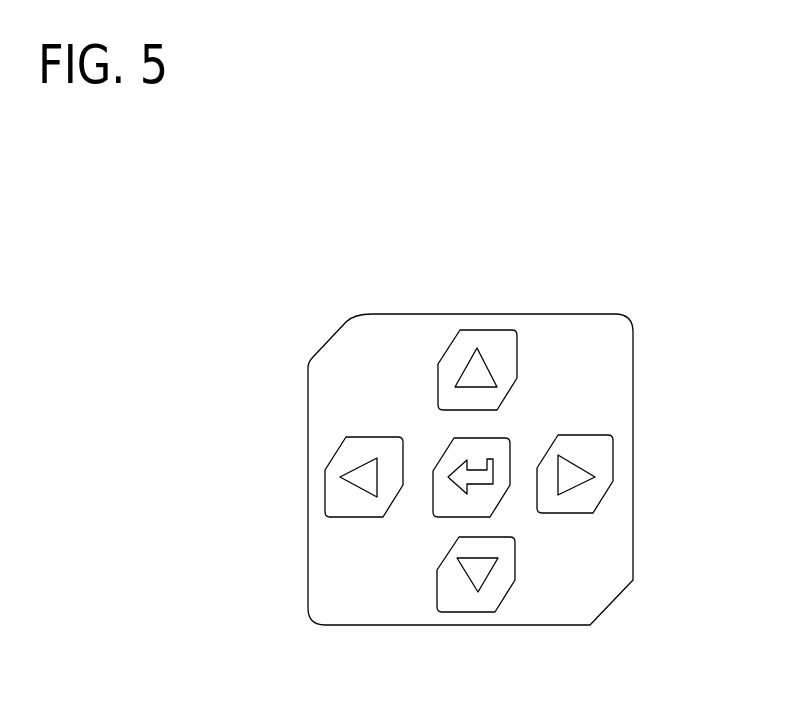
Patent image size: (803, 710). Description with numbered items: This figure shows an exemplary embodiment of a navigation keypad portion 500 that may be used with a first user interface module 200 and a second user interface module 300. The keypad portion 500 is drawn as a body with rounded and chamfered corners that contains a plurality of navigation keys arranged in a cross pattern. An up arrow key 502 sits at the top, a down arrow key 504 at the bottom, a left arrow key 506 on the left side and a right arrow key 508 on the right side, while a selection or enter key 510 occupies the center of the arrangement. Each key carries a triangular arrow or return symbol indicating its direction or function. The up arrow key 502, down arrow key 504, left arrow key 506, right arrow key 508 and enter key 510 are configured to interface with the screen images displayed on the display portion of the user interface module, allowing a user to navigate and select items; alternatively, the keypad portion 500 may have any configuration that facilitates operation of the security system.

The first user interface module 200 is at (262, 212).
The second user interface module 300 is at (628, 292).
The navigation keypad portion 500 is at (308, 332).
The up arrow key 502 is at (462, 367).
The down arrow key 504 is at (478, 580).
The left arrow key 506 is at (360, 470).
The right arrow key 508 is at (580, 478).
The enter key 510 is at (493, 463).